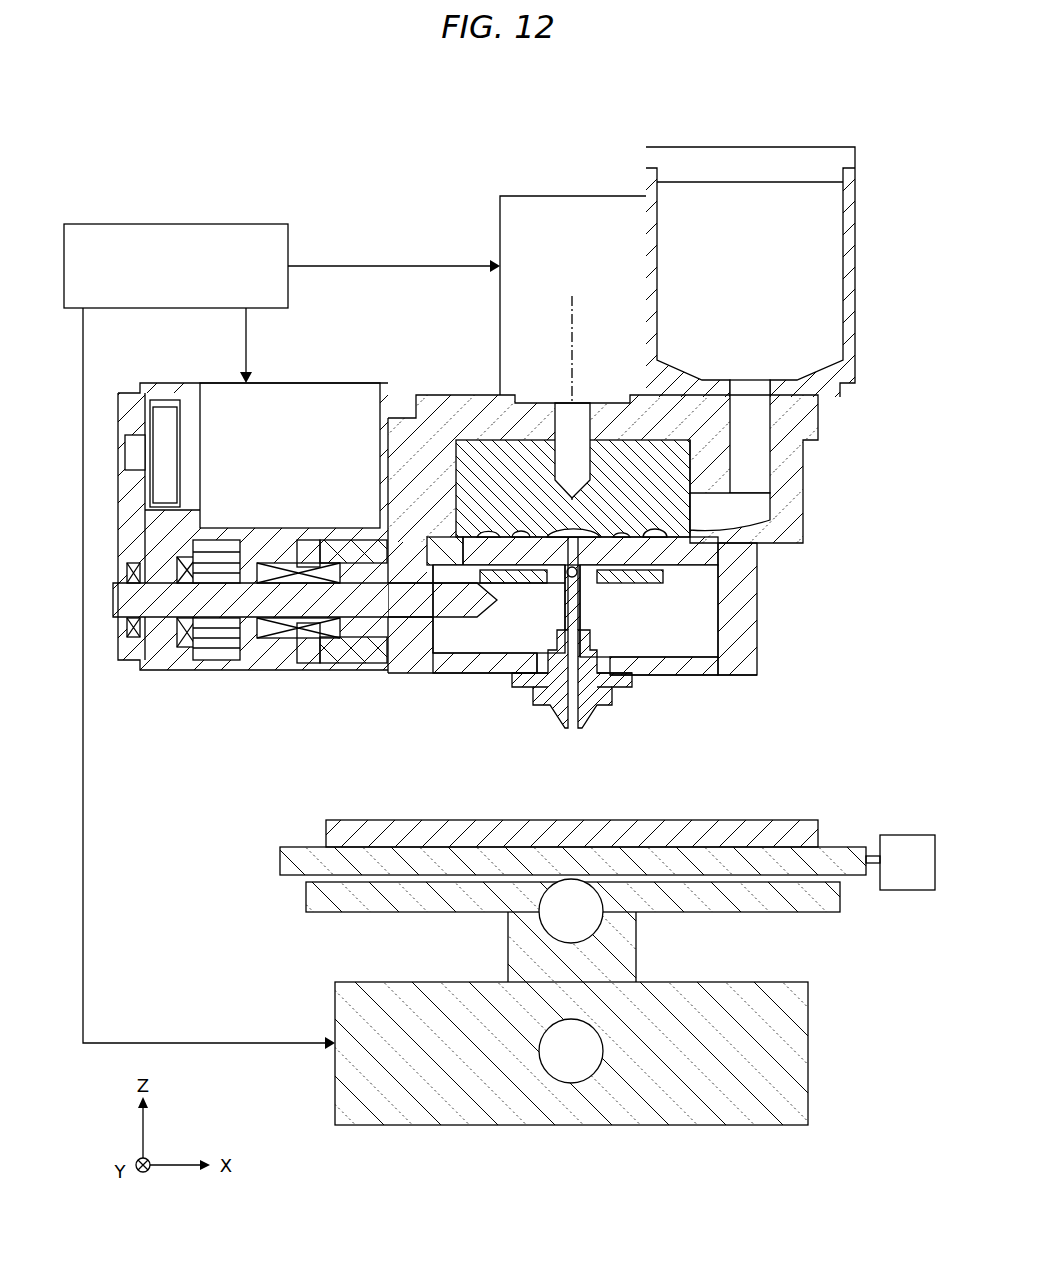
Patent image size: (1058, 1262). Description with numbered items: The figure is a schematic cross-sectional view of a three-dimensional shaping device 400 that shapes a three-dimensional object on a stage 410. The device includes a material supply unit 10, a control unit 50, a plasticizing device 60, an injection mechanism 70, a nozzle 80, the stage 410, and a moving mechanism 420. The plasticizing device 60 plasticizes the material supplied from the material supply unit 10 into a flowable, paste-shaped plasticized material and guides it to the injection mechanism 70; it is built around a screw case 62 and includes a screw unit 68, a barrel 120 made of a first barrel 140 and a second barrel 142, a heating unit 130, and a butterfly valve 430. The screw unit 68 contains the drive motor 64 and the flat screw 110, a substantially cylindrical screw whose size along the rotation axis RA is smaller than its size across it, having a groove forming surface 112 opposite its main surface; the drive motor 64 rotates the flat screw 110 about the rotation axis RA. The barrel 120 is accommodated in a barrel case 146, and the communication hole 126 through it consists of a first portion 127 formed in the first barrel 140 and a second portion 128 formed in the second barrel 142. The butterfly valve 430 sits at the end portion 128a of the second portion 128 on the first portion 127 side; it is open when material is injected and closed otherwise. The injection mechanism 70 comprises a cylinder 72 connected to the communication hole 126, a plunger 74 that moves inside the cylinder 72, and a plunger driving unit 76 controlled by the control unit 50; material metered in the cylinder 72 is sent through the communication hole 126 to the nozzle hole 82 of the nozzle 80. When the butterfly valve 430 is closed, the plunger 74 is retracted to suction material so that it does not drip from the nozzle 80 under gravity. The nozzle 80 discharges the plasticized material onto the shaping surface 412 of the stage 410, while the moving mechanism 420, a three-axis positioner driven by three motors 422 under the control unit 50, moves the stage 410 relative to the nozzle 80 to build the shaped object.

The three-dimensional shaping device 400 is at (862, 80).
The material supply unit 10 is at (850, 128).
The control unit 50 is at (162, 253).
The plasticizing device 60 is at (642, 526).
The screw case 62 is at (775, 528).
The drive motor 64 is at (540, 240).
The screw unit 68 is at (484, 186).
The injection mechanism 70 is at (305, 530).
The cylinder 72 is at (515, 615).
The plunger 74 is at (447, 615).
The plunger driving unit 76 is at (302, 410).
The nozzle 80 is at (585, 712).
The nozzle hole 82 is at (598, 695).
The flat screw 110 is at (640, 495).
The groove forming surface 112 is at (748, 468).
The barrel 120 is at (661, 503).
The communication hole 126 is at (656, 674).
The first portion 127 is at (718, 657).
The second portion 128 is at (690, 676).
The end portion 128a is at (572, 560).
The heating unit 130 is at (497, 615).
The first barrel 140 is at (660, 548).
The second barrel 142 is at (677, 593).
The barrel case 146 is at (738, 635).
The stage 410 is at (773, 835).
The shaping surface 412 is at (625, 820).
The moving mechanism 420 is at (578, 950).
The motor 422 is at (905, 850).
The butterfly valve 430 is at (560, 548).
The rotation axis RA is at (565, 348).